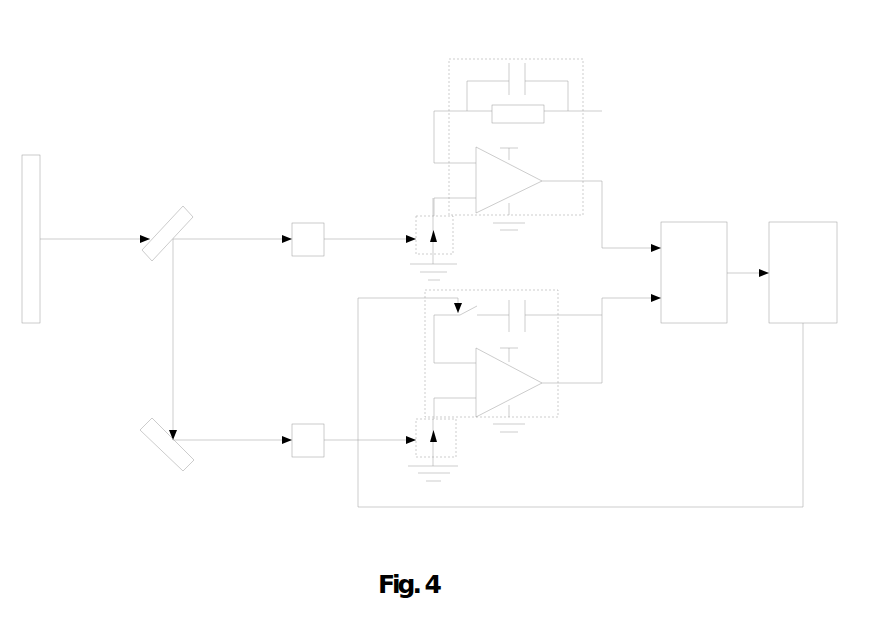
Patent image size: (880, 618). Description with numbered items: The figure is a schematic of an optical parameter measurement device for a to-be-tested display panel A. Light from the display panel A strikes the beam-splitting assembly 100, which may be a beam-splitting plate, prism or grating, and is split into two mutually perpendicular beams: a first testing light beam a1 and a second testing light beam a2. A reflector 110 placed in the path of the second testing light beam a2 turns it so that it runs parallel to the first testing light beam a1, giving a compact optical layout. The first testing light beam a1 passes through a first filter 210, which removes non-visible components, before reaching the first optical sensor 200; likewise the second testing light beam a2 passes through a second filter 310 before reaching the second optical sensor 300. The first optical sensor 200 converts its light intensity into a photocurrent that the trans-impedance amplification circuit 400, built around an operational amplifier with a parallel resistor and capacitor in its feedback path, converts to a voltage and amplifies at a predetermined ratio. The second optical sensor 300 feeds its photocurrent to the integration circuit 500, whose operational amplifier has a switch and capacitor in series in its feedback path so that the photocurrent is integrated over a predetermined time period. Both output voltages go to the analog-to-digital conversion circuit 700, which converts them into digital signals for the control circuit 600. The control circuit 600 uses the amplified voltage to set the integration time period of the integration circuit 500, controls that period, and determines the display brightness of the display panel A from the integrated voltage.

The to-be-tested display panel A is at (33, 155).
The beam-splitting assembly 100 is at (183, 206).
The reflector 110 is at (145, 436).
The first testing light beam a1 is at (232, 228).
The second testing light beam a2 is at (232, 428).
The first filter 210 is at (300, 223).
The first optical sensor 200 is at (423, 216).
The trans-impedance amplification circuit 400 is at (511, 59).
The integration circuit 500 is at (503, 290).
The second filter 310 is at (300, 424).
The second optical sensor 300 is at (423, 419).
The analog-to-digital conversion circuit 700 is at (694, 222).
The control circuit 600 is at (803, 222).